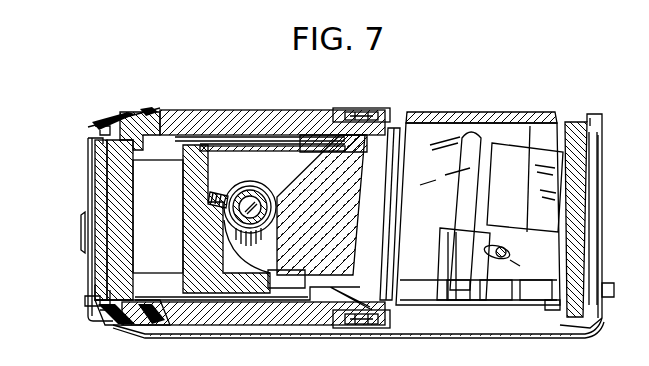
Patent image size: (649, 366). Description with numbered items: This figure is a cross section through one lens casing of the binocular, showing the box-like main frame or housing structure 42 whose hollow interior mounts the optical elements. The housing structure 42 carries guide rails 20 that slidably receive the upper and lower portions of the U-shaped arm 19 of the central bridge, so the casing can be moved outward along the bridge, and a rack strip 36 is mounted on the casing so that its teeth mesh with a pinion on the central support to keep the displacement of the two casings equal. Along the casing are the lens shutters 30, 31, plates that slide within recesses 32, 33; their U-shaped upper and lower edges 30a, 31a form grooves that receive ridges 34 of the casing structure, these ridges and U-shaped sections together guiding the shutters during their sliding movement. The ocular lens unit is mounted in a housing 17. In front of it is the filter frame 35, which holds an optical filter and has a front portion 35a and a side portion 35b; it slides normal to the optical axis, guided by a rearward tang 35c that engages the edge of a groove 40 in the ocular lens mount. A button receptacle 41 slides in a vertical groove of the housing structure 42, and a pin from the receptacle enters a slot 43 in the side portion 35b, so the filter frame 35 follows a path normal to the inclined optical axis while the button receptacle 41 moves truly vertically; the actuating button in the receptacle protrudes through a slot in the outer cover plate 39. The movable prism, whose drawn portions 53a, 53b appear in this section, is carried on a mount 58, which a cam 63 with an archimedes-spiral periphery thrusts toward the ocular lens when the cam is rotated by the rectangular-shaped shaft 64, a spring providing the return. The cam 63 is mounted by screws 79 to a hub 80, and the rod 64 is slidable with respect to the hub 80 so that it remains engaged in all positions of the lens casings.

The housing 17 is at (416, 180).
The arm 19 is at (183, 112).
The guide rails 20 is at (130, 113).
The lens shutter 30 is at (88, 172).
The U-shaped upper and lower edges 30a is at (95, 130).
The lens shutter 31 is at (600, 170).
The U-shaped upper and lower edges 31a is at (590, 126).
The recess 32 is at (88, 304).
The recess 33 is at (606, 290).
The ridges 34 is at (96, 142).
The filter frame 35 is at (496, 312).
The front portion 35a is at (560, 312).
The side portion 35b is at (487, 240).
The rearward tang 35c is at (470, 215).
The rack strip 36 is at (250, 145).
The outer cover plate 39 is at (296, 338).
The groove 40 is at (478, 140).
The button receptacle 41 is at (508, 250).
The housing structure 42 is at (130, 252).
The slot 43 is at (508, 258).
The reflector body 53a is at (350, 258).
The reflector plate 53b is at (362, 148).
The mount 58 is at (286, 279).
The cam 63 is at (216, 194).
The rectangular-shaped shaft 64 is at (247, 190).
The screws 79 is at (210, 201).
The hubs 80 is at (253, 191).